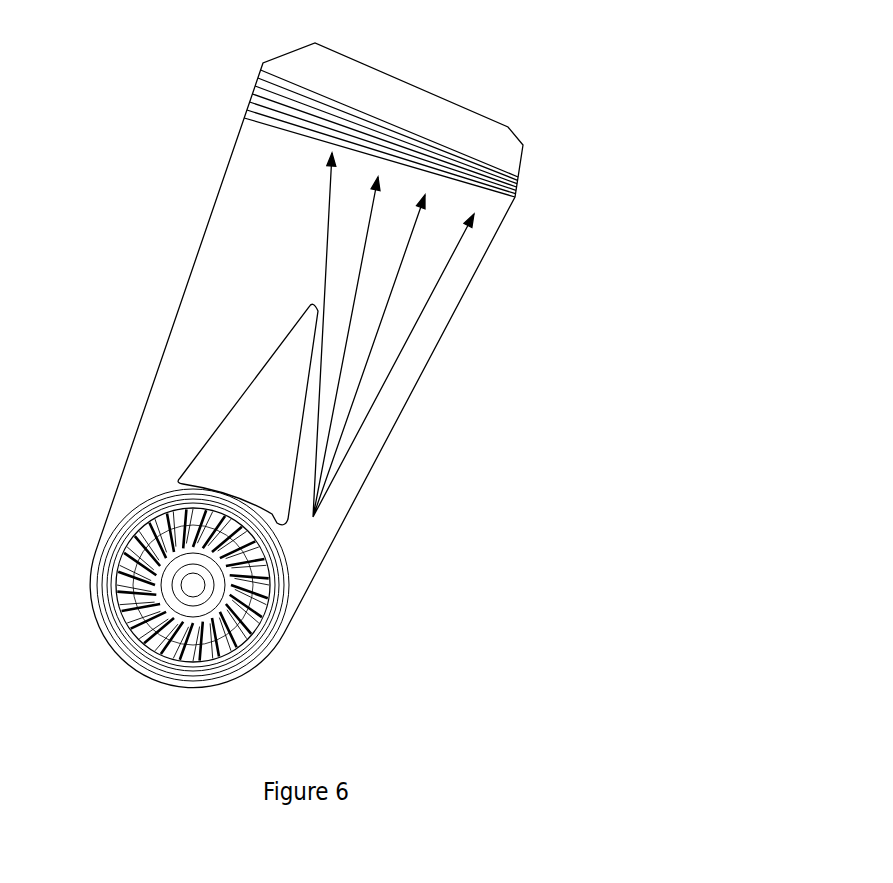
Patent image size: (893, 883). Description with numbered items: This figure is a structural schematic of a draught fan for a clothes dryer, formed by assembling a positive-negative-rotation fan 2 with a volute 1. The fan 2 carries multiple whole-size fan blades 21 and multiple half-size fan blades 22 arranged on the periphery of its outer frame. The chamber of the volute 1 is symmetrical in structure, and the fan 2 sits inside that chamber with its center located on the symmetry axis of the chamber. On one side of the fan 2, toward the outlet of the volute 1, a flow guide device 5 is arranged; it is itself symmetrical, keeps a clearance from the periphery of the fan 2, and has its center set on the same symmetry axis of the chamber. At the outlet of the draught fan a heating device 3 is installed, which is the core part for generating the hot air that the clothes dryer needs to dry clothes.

The volute 1 is at (162, 407).
The fan 2 is at (263, 645).
The whole-size fan blades 21 is at (217, 648).
The half-size fan blades 22 is at (152, 660).
The heating device 3 is at (403, 110).
The flow guide device 5 is at (270, 501).